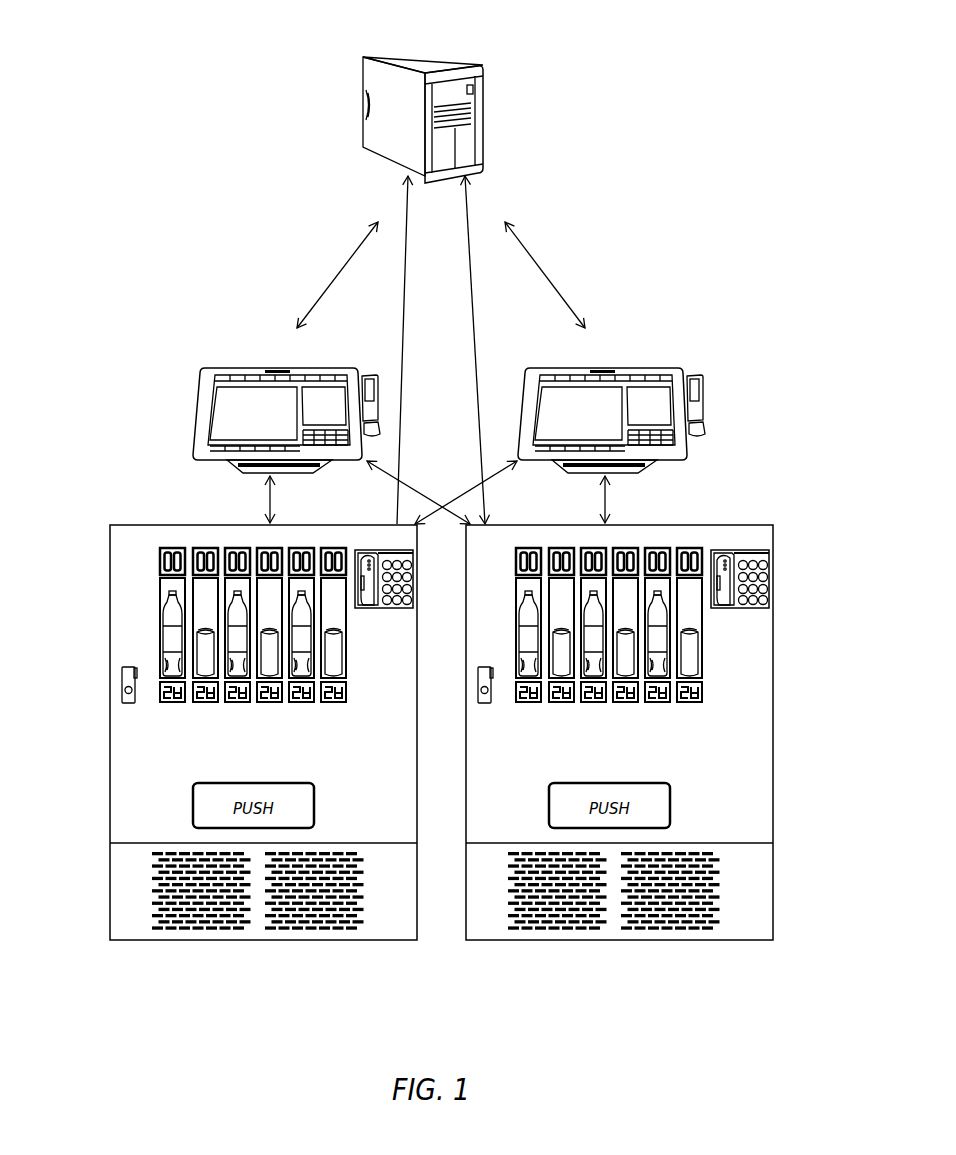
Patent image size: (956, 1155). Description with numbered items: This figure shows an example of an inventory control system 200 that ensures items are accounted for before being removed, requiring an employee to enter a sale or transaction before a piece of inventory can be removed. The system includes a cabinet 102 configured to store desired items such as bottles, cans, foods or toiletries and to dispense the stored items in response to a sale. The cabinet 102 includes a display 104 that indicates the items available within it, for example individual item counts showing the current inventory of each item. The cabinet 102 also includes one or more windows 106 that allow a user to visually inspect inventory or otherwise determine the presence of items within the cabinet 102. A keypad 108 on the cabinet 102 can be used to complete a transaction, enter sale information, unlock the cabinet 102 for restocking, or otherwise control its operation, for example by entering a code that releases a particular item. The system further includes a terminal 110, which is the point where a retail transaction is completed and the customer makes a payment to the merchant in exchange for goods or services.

The vending system 200 is at (240, 68).
The cabinet 102 is at (484, 97).
The display 104 is at (163, 700).
The windows 106 is at (693, 618).
The keypad 108 is at (750, 548).
The terminal 110 is at (200, 410).